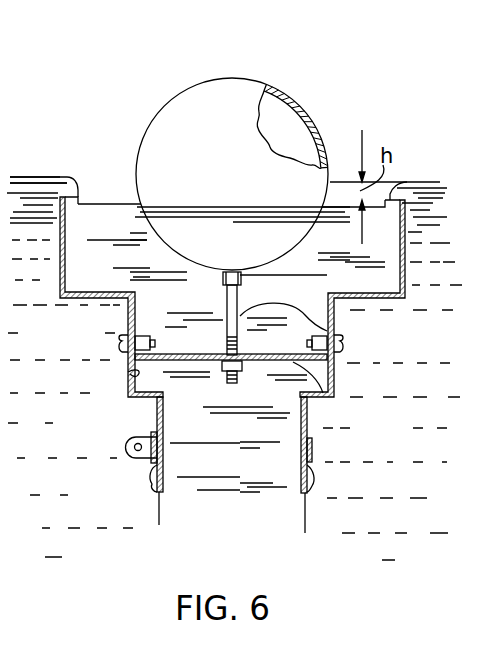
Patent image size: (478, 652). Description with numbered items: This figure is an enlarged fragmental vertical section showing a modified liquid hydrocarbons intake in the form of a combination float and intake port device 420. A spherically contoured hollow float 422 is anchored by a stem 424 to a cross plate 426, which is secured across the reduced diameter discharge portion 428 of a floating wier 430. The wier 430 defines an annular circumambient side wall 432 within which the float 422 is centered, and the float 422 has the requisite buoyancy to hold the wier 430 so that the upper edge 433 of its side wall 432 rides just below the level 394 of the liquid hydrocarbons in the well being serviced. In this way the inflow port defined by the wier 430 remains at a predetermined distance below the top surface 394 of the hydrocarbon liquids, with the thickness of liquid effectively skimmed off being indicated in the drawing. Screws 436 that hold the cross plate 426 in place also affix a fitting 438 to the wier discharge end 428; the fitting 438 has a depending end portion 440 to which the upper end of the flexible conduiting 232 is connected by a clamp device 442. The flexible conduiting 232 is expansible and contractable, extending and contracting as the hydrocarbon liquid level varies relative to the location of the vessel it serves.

The flexible conduiting 232 is at (159, 513).
The level of the liquid hydrocarbons 394 is at (30, 177).
The combination float and intake port device 420 is at (356, 113).
The spherically contoured hollow float 422 is at (247, 77).
The stem 424 is at (334, 316).
The cross plate 426 is at (318, 382).
The reduced diameter discharge portion 428 is at (128, 372).
The floating wier 430 is at (423, 200).
The annular circumambient side wall 432 is at (52, 208).
The upper edge of the side wall 433 is at (107, 198).
The screws 436 is at (120, 343).
The fitting 438 is at (130, 393).
The depending end portion 440 is at (152, 414).
The clamp device 442 is at (134, 466).